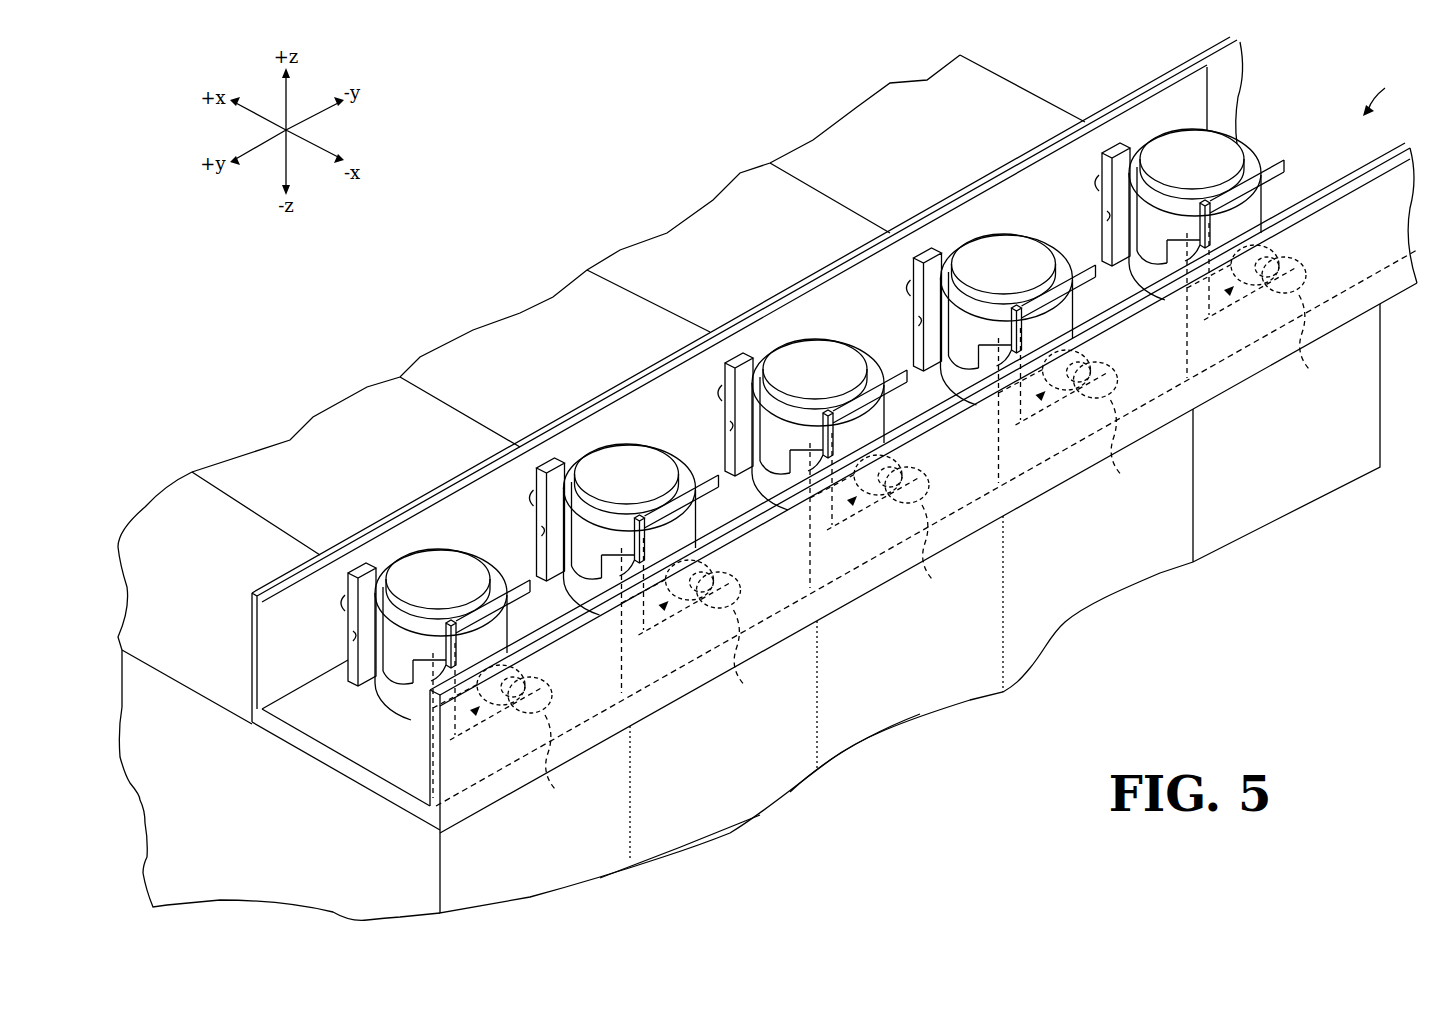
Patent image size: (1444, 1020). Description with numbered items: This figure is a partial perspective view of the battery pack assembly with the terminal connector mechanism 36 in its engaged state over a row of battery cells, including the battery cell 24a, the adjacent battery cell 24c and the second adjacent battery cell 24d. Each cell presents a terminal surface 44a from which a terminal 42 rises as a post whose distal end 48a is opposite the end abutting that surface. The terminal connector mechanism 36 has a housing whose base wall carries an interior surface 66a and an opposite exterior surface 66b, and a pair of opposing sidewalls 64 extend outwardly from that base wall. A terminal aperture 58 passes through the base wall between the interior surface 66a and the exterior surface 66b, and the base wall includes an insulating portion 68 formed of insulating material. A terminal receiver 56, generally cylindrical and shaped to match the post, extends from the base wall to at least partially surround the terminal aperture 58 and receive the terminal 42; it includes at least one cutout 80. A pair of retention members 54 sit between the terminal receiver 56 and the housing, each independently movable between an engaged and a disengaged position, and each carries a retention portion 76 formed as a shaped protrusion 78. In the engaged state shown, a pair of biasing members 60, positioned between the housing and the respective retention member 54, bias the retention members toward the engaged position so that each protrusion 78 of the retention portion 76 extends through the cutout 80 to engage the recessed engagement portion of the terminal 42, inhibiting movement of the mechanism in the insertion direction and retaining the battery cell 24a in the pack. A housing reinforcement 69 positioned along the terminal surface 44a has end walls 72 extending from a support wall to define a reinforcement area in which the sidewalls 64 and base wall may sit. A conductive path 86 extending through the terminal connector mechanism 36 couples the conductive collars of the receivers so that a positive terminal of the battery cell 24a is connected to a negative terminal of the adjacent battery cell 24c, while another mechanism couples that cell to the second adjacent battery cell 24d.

The terminal connector mechanism 36 is at (795, 71).
The terminal surface 44a is at (172, 505).
The terminal 42 is at (818, 377).
The distal end 48a is at (799, 340).
The opposing sidewall 64 is at (262, 622).
The end wall 72 is at (814, 459).
The retention member 54 is at (840, 459).
The terminal aperture 58 is at (724, 373).
The terminal receiver 56 is at (748, 455).
The cutout 80 is at (811, 446).
The retention portion 76 is at (735, 491).
The shaped protrusion 78 is at (697, 389).
The biasing member 60 is at (811, 502).
The conductive path 86 is at (548, 632).
The interior surface 66a is at (303, 722).
The exterior surface 66b is at (322, 742).
The insulating portion 68 is at (406, 770).
The battery cell 24a is at (597, 876).
The adjacent battery cell 24c is at (733, 833).
The second adjacent battery cell 24d is at (853, 735).
The housing reinforcement 69 is at (1384, 88).